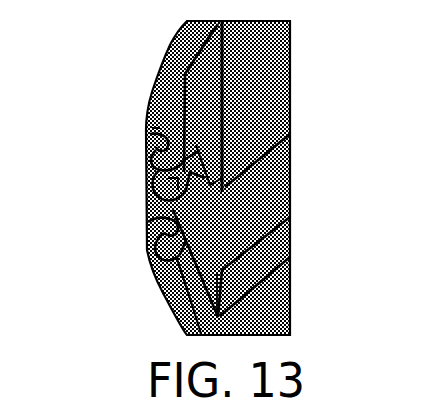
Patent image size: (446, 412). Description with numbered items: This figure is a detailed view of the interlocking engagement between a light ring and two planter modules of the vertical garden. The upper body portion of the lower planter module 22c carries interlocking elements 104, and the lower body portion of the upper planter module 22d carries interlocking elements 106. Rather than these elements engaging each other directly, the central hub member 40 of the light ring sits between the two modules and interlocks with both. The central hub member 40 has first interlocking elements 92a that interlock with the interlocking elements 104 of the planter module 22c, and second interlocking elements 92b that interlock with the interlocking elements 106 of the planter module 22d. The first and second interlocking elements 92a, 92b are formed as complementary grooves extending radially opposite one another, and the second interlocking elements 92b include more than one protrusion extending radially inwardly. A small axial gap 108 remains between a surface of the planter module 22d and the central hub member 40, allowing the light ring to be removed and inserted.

The planter module 22d is at (168, 60).
The axial gap 108 is at (150, 127).
The interlocking elements 106 is at (146, 149).
The second interlocking elements 92b is at (146, 172).
The central hub member 40 is at (146, 200).
The interlocking elements 104 is at (147, 227).
The first interlocking elements 92a is at (152, 265).
The planter module 22c is at (166, 307).